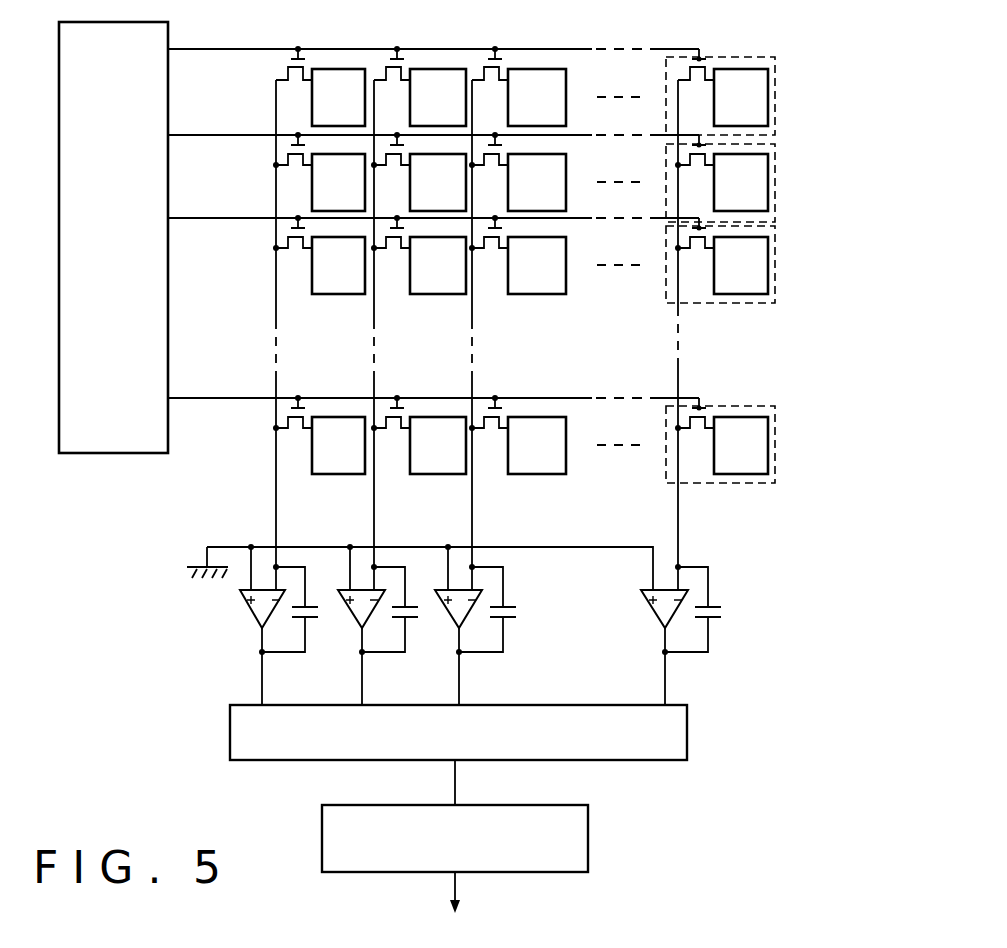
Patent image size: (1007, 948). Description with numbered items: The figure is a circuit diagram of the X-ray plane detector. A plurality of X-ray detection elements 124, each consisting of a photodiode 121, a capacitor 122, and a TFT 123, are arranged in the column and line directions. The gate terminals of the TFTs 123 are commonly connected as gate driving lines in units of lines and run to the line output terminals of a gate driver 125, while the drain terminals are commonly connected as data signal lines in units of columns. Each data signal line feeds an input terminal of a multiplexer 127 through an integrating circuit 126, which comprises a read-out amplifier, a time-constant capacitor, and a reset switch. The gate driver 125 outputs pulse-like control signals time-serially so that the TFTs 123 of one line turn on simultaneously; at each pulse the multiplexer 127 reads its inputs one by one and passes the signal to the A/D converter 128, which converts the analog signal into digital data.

The photodiode 121 is at (529, 280).
The capacitor 122 is at (786, 480).
The TFT 123 is at (678, 429).
The X-ray detection element 124 is at (789, 450).
The gate driver 125 is at (117, 454).
The integrating circuit 126 is at (720, 655).
The multiplexer 127 is at (688, 732).
The A/D converter 128 is at (589, 838).